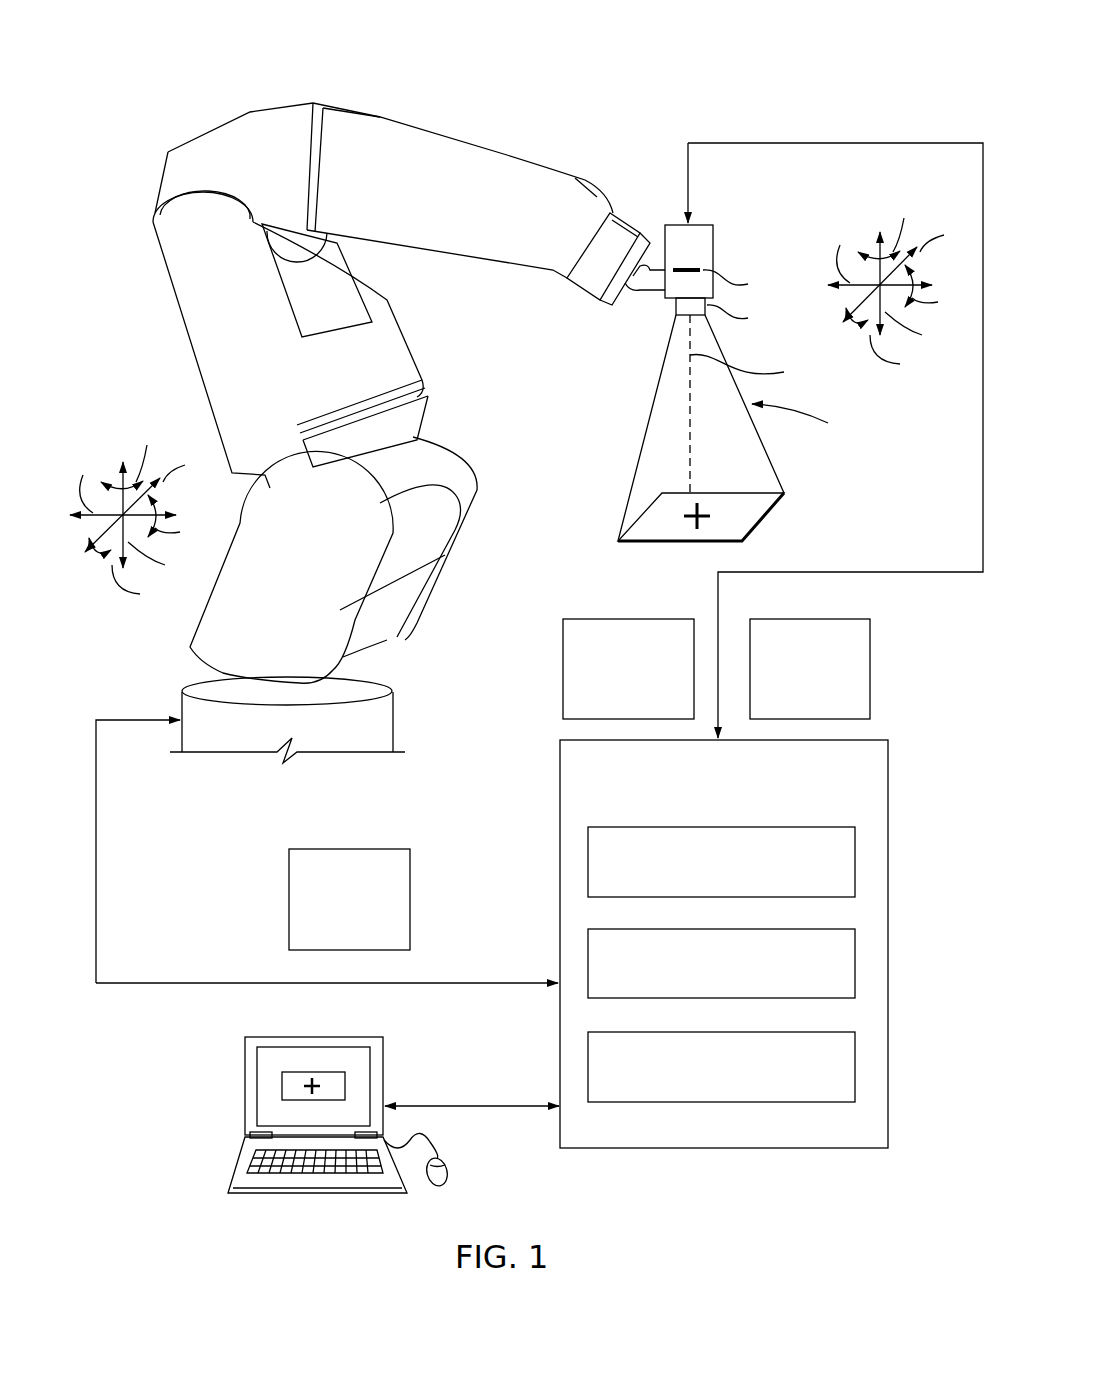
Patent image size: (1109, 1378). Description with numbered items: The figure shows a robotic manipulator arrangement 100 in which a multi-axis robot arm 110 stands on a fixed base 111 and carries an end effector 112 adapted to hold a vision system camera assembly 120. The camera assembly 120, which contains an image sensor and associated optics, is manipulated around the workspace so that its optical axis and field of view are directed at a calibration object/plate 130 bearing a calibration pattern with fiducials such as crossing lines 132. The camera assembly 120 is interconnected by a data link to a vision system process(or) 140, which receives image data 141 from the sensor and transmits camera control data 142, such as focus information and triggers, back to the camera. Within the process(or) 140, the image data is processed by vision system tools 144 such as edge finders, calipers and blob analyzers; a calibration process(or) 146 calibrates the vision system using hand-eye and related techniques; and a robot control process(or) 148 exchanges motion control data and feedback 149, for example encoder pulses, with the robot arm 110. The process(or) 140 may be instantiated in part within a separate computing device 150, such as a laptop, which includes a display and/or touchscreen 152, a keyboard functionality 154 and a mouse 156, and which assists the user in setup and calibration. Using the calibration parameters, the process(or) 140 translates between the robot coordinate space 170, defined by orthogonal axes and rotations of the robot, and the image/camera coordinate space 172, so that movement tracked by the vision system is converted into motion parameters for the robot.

The robotic manipulator arrangement 100 is at (677, 68).
The robot arm 110 is at (517, 150).
The fixed base 111 is at (374, 680).
The end effector 112 is at (603, 312).
The vision system camera assembly 120 is at (720, 226).
The calibration object/plate 130 is at (740, 512).
The crossing lines 132 is at (702, 525).
The vision system process(or) 140 is at (560, 832).
The image data 141 is at (870, 668).
The camera control data 142 is at (563, 671).
The vision system tools 144 is at (855, 857).
The calibration process(or)/module 146 is at (855, 962).
The robot control interface/process(or) 148 is at (855, 1065).
The motion control data/feedback 149 is at (289, 897).
The computing device 150 is at (400, 1048).
The display and/or touchscreen 152 is at (268, 1082).
The keyboard functionality 154 is at (250, 1155).
The mouse 156 is at (452, 1173).
The robot coordinate space 170 is at (143, 412).
The image/camera coordinate space 172 is at (893, 398).